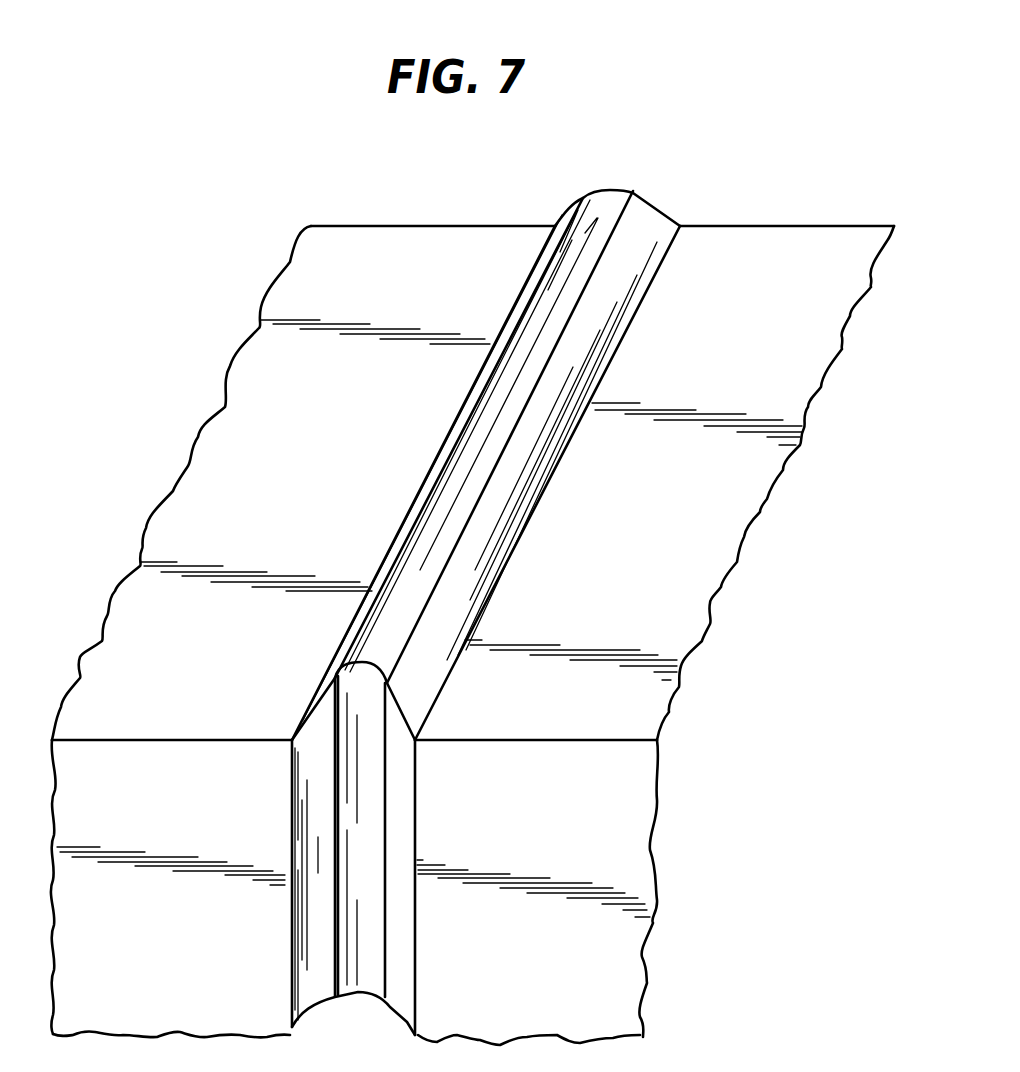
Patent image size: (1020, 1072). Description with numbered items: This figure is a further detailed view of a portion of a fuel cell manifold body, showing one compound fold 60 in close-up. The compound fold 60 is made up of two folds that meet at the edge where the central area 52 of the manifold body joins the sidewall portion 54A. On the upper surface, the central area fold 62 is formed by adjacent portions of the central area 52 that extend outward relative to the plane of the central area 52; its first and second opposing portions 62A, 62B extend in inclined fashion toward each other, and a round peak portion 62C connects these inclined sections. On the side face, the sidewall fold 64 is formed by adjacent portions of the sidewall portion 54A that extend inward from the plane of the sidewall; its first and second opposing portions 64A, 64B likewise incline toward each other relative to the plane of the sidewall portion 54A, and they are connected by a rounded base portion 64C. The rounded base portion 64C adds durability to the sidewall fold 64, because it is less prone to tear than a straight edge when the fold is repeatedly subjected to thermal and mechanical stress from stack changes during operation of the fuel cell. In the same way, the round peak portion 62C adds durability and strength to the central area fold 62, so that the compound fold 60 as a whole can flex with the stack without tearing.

The compound fold 60 is at (709, 178).
The central area 52 is at (330, 241).
The sidewall portion 54A is at (630, 832).
The central area fold 62 is at (636, 385).
The first opposing portion of central area fold 62A is at (482, 582).
The second opposing portion of central area fold 62B is at (350, 632).
The round peak portion 62C is at (455, 462).
The sidewall fold 64 is at (445, 930).
The first opposing portion of sidewall fold 64A is at (402, 851).
The second opposing portion of sidewall fold 64B is at (307, 893).
The rounded base portion 64C is at (350, 803).